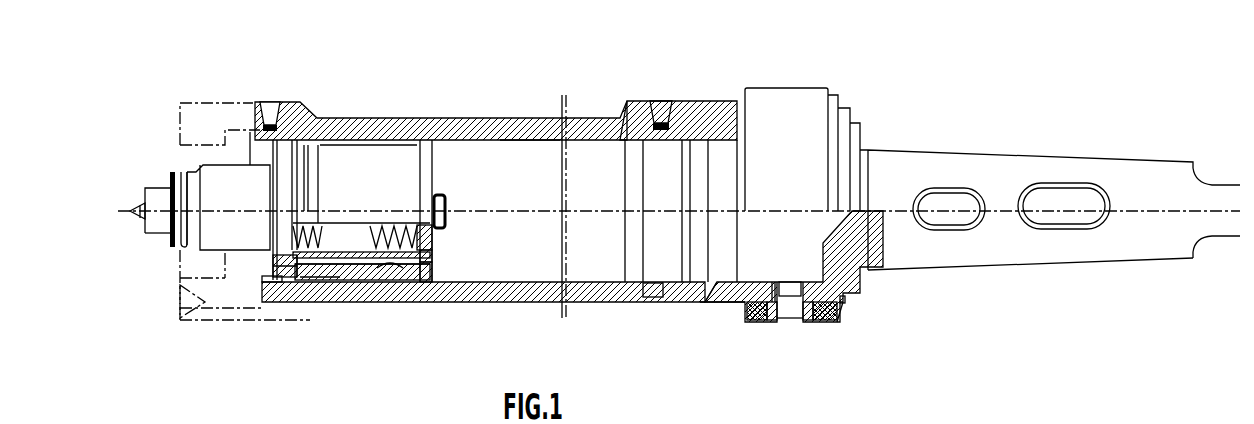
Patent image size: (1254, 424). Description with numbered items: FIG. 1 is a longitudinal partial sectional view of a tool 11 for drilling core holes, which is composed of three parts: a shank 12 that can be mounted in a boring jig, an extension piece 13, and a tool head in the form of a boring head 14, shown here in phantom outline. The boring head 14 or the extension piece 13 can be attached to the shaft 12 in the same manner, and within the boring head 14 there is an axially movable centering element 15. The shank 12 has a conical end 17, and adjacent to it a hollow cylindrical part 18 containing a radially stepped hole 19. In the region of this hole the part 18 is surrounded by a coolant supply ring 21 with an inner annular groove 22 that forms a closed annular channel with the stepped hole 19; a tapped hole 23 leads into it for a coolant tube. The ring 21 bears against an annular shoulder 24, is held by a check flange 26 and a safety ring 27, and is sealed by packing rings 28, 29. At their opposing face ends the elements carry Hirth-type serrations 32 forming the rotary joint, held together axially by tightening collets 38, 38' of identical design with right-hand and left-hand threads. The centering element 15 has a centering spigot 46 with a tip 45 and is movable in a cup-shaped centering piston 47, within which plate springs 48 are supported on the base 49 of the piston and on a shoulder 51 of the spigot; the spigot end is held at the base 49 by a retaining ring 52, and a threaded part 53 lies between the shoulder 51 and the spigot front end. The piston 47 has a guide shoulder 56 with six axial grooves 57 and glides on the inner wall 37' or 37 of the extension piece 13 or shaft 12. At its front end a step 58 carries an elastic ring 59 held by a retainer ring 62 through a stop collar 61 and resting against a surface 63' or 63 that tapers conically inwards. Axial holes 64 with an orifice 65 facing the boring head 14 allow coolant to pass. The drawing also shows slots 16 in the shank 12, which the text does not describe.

The tool 11 is at (1002, 118).
The shank 12 is at (1094, 156).
The extension piece 13 is at (470, 113).
The boring head 14 is at (188, 104).
The centering element 15 is at (173, 170).
The slots 16 is at (1033, 218).
The conical end 17 is at (1115, 240).
The hollow cylindrical part 18 is at (723, 112).
The radially stepped hole 19 is at (790, 284).
The coolant supply ring 21 is at (815, 323).
The annular groove 22 is at (777, 292).
The tapped hole 23 is at (792, 323).
The annular shoulder 24 is at (745, 313).
The check flange 26 is at (841, 313).
The safety ring 27 is at (846, 300).
The packing ring 28 is at (755, 321).
The packing ring 29 is at (766, 321).
The Hirth-type serrations 32 is at (283, 102).
The inner wall 37 is at (733, 195).
The inner wall 37′ is at (520, 142).
The tightening collet 38 is at (630, 300).
The tightening collet 38′ is at (229, 322).
The tip 45 is at (137, 217).
The centering spigot 46 is at (155, 237).
The centering piston 47 is at (432, 262).
The plate springs 48 is at (378, 243).
The base 49 is at (436, 242).
The shoulder 51 is at (213, 177).
The retaining ring 52 is at (435, 230).
The threaded part 53 is at (173, 193).
The guide shoulder 56 is at (345, 248).
The axial grooves 57 is at (385, 282).
The step 58 is at (312, 248).
The elastic ring 59 is at (322, 290).
The stop collar 61 is at (290, 285).
The retainer ring 62 is at (285, 290).
The conically tapering surface 63 is at (692, 285).
The conically tapering surface 63′ is at (325, 285).
The axial holes 64 is at (415, 282).
The orifice 65 is at (270, 284).